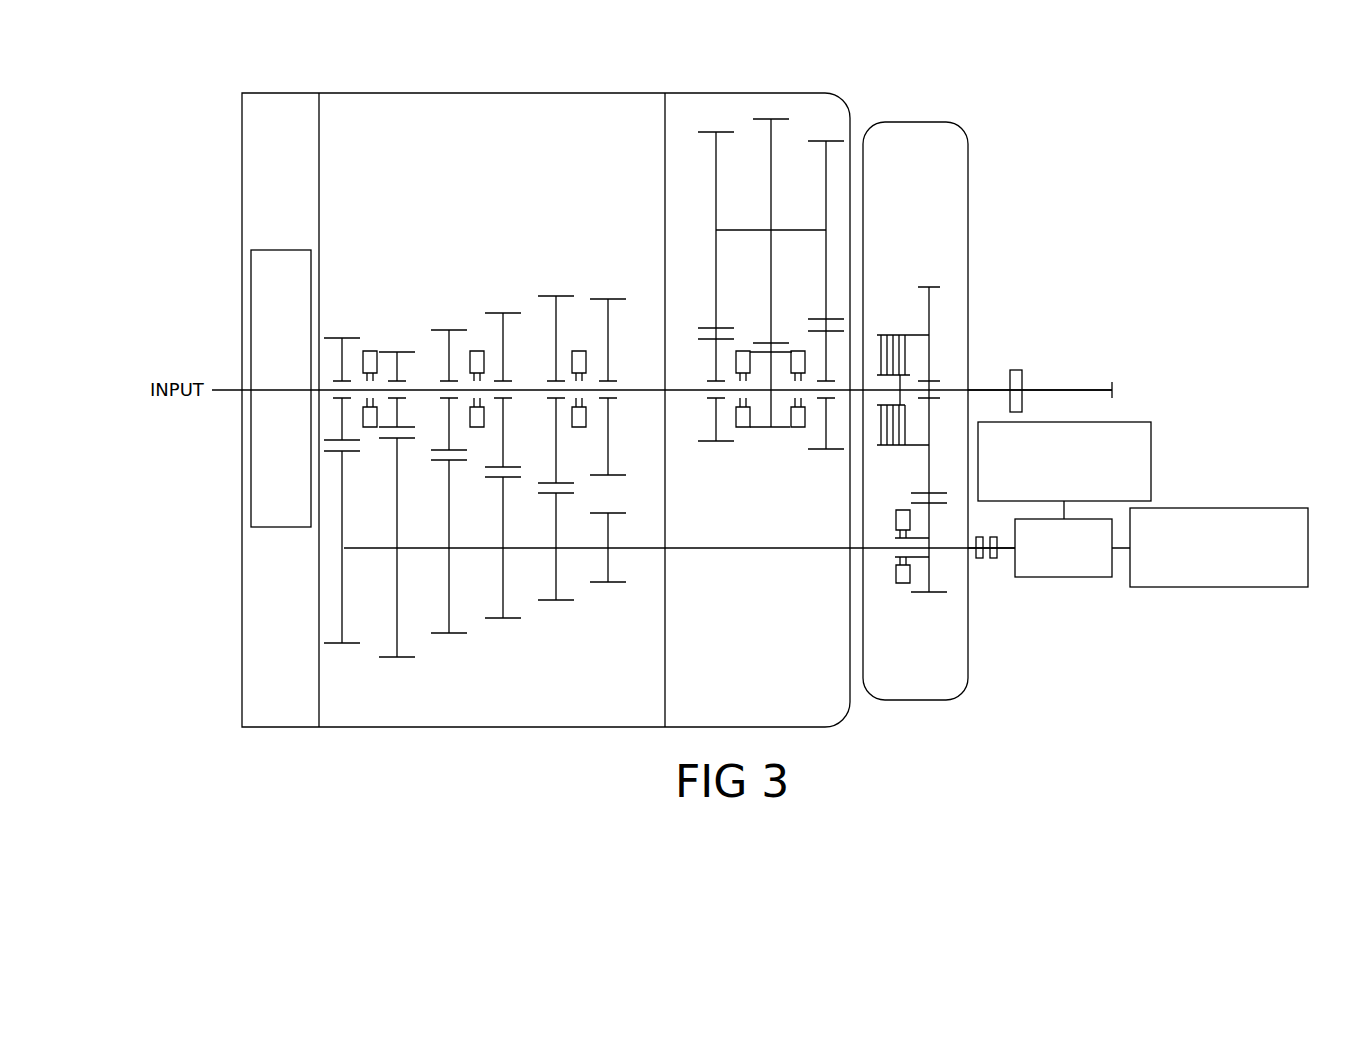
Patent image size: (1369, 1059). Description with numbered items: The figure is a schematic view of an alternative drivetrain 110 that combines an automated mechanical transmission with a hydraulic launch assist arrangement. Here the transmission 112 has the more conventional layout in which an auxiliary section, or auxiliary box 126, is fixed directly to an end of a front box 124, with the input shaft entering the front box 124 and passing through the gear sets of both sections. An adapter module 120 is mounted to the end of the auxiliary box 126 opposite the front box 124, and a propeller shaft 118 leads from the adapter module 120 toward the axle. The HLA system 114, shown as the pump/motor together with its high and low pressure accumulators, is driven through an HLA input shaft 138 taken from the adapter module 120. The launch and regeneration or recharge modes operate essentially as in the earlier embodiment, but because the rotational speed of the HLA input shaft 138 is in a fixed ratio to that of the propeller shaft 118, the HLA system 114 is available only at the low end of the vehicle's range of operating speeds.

The drivetrain 110 is at (1070, 175).
The transmission 112 is at (758, 93).
The HLA system 114 is at (1225, 625).
The propeller shaft 118 is at (1048, 388).
The adapter module 120 is at (915, 122).
The front box 124 is at (491, 93).
The auxiliary box 126 is at (685, 93).
The HLA input shaft 138 is at (1005, 552).